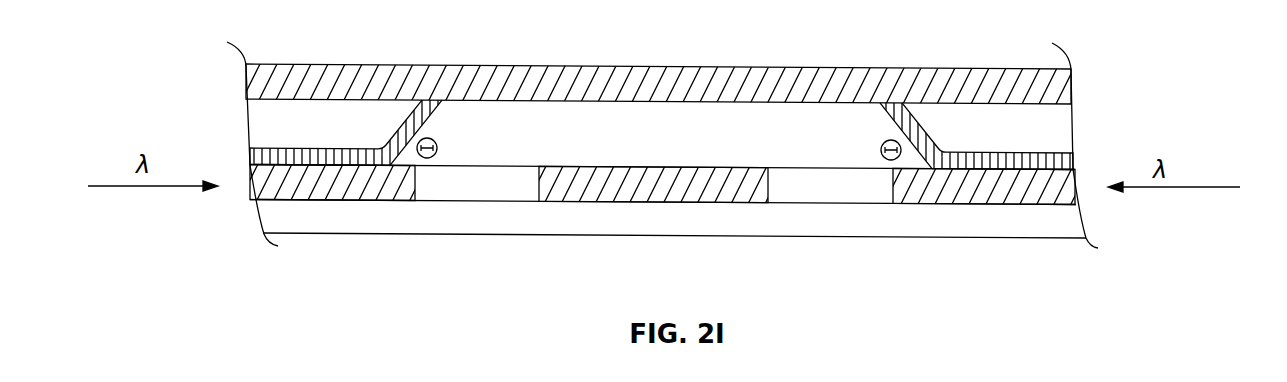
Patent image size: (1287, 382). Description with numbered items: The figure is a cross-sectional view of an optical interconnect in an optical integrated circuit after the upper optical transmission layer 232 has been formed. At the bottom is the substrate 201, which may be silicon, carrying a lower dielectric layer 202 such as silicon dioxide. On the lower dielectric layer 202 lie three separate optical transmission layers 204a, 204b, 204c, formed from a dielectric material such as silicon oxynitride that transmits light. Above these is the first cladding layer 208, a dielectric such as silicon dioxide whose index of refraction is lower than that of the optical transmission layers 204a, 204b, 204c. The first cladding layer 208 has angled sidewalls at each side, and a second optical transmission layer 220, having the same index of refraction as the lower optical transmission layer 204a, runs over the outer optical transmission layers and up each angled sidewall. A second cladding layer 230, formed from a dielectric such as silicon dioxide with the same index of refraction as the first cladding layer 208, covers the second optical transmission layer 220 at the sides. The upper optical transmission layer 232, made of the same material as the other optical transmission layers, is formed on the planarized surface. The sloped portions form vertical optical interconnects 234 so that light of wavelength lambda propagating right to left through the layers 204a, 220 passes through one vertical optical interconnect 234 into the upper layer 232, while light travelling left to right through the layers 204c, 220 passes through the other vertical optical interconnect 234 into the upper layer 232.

The substrate 201 is at (829, 268).
The lower dielectric layer 202 is at (763, 228).
The lower optical transmission layer 204a is at (923, 187).
The optical transmission layer 204b is at (633, 182).
The optical transmission layer 204c is at (380, 183).
The first cladding layer 208 is at (665, 144).
The second optical transmission layer 220 is at (256, 161).
The second cladding layer 230 is at (271, 126).
The upper optical transmission layer 232 is at (662, 82).
The vertical optical interconnect 234 is at (409, 102).